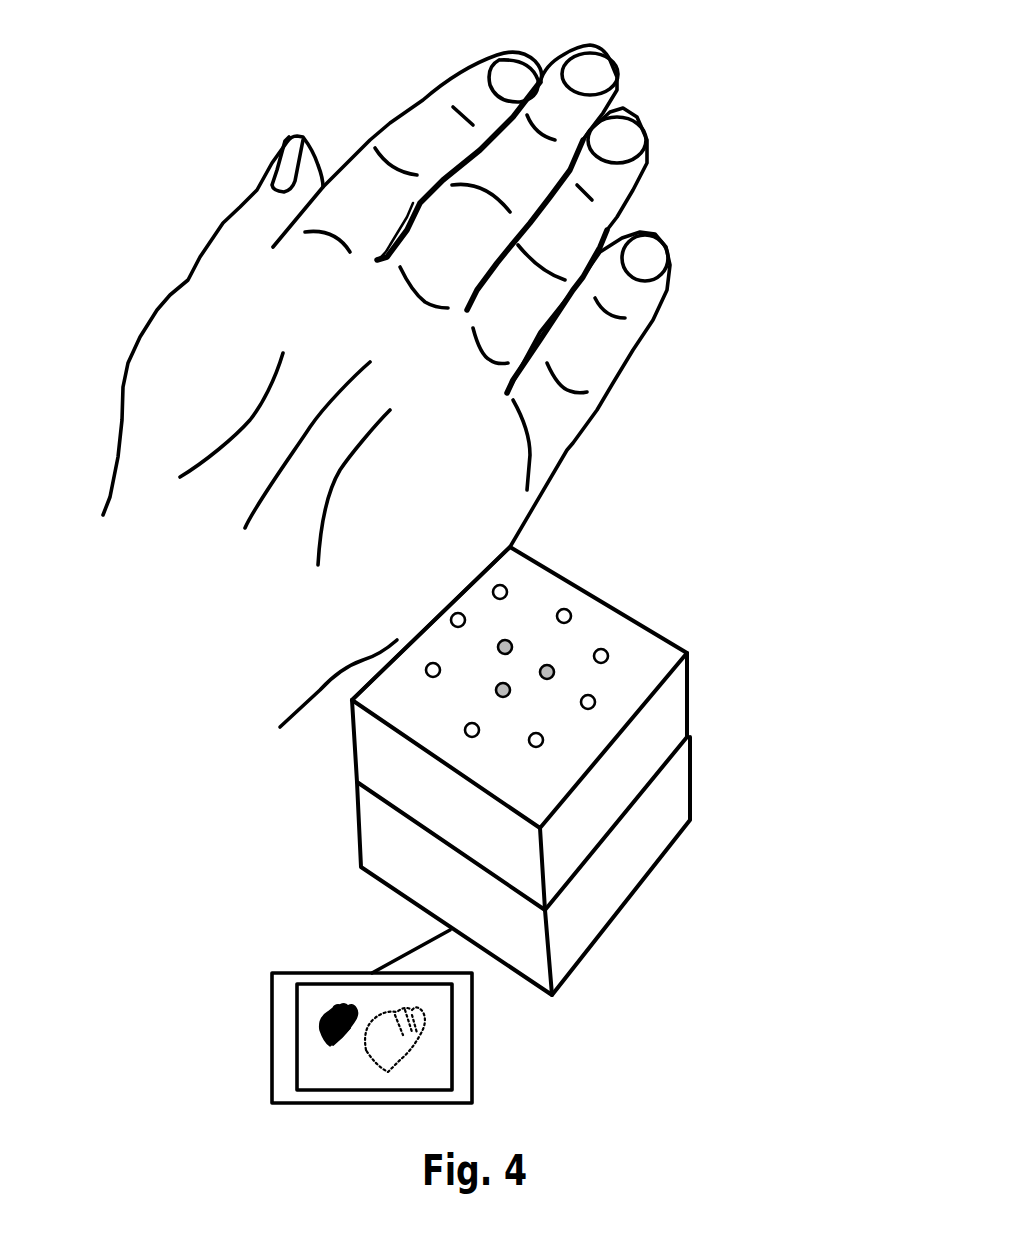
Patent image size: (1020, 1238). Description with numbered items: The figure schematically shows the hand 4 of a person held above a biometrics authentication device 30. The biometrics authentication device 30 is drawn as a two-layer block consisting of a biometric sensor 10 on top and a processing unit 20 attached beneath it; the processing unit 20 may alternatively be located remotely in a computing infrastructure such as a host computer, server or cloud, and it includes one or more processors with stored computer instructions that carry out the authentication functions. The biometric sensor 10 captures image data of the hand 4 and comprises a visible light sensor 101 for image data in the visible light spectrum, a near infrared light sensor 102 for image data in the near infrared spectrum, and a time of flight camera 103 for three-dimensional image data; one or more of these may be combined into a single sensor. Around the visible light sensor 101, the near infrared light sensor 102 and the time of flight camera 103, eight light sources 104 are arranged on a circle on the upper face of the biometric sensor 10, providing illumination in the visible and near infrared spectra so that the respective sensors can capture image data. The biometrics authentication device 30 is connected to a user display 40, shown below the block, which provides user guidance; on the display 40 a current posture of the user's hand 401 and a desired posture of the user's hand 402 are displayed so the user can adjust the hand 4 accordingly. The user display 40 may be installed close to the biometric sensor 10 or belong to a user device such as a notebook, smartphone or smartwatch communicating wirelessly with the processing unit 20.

The hand 4 is at (90, 348).
The biometric sensor 10 is at (463, 819).
The processing unit 20 is at (463, 904).
The biometrics authentication device 30 is at (547, 705).
The user display 40 is at (361, 1025).
The visible light sensor 101 is at (514, 637).
The near infrared light sensor 102 is at (558, 676).
The time of flight camera 103 is at (492, 690).
The light sources 104 is at (439, 666).
The current posture of the user's hand 401 is at (320, 1027).
The desired posture of the user's hand 402 is at (398, 1050).